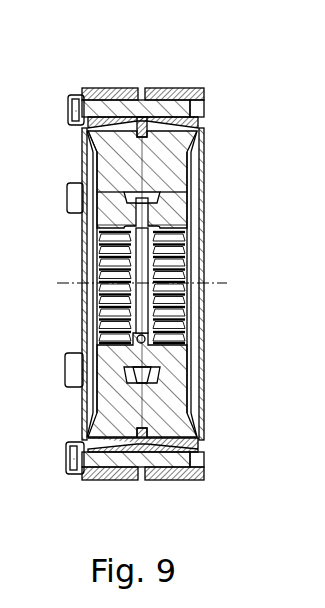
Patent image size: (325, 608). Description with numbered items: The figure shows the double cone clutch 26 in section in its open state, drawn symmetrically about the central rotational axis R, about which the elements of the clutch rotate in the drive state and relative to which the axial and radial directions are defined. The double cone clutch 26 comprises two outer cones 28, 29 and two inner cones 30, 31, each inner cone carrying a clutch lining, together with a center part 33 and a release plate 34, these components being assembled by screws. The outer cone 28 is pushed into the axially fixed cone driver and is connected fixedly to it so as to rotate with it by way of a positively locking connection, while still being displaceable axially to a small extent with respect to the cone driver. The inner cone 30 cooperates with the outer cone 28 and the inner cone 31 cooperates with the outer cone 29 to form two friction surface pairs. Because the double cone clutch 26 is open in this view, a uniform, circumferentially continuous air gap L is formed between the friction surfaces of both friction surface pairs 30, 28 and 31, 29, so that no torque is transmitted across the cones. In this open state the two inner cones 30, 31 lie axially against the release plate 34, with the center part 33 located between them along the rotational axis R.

The double cone clutch 26 is at (214, 347).
The outer cone 28 is at (105, 92).
The outer cone 29 is at (183, 92).
The inner cone 30 is at (88, 138).
The inner cone 31 is at (187, 139).
The center part 33 is at (183, 203).
The release plate 34 is at (138, 481).
The rotational axis R is at (222, 283).
The air gap L is at (202, 111).